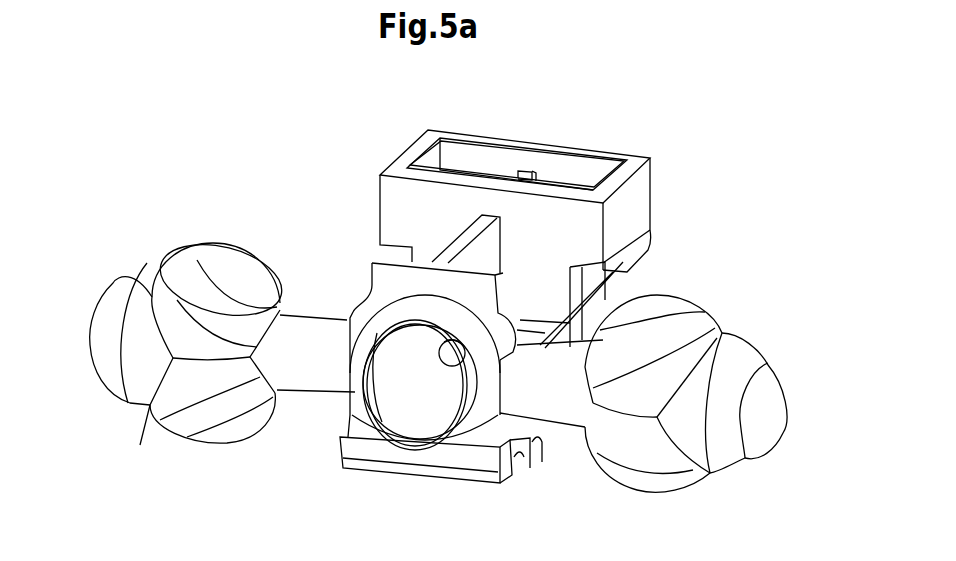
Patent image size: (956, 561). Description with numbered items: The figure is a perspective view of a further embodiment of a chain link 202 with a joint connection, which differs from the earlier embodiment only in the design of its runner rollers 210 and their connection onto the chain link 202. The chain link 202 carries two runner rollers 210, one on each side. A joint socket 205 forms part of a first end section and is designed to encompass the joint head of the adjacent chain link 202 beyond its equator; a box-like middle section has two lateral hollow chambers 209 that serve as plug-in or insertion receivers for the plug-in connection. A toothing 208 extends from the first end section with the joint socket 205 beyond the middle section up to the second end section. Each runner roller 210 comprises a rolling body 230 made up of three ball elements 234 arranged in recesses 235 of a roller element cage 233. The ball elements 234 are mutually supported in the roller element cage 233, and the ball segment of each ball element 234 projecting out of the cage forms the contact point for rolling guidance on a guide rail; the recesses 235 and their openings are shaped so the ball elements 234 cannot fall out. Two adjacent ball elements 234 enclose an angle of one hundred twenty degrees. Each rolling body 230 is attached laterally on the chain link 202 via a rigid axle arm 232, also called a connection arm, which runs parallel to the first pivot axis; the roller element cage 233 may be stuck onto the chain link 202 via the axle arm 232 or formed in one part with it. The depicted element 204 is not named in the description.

The chain link 202 is at (672, 143).
The ball 204 is at (430, 437).
The joint socket 205 is at (398, 395).
The toothing 208 is at (513, 464).
The lateral hollow chambers 209 is at (497, 160).
The runner roller 210 is at (122, 410).
The rolling body 230 is at (163, 458).
The axle arm 232 is at (323, 333).
The roller element cage 233 is at (167, 395).
The ball elements 234 is at (98, 320).
The recesses 235 is at (212, 268).